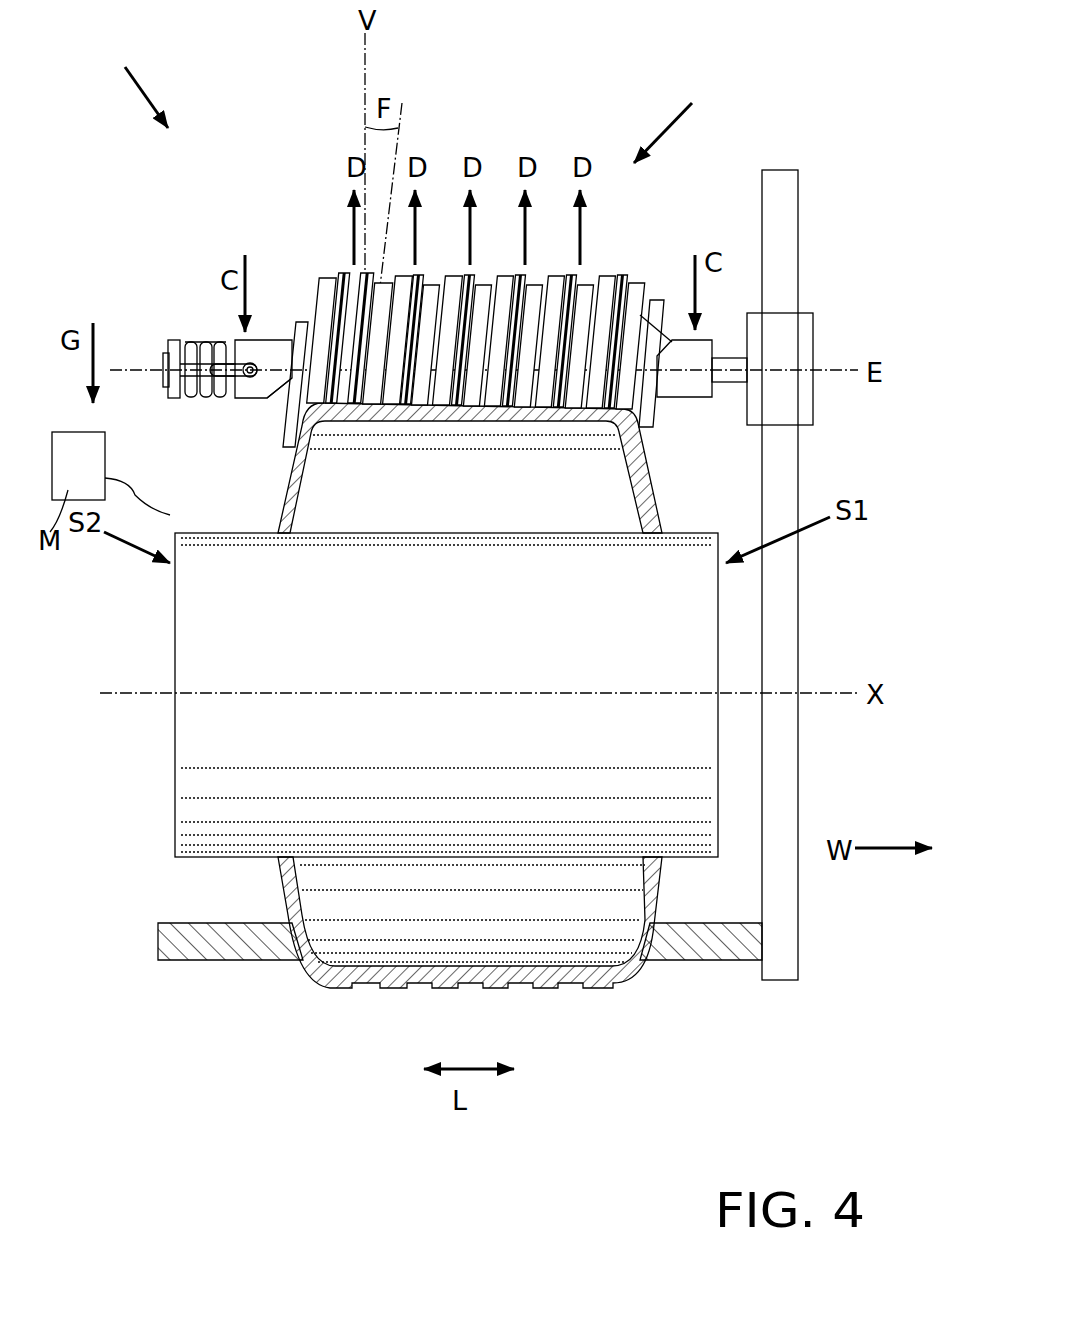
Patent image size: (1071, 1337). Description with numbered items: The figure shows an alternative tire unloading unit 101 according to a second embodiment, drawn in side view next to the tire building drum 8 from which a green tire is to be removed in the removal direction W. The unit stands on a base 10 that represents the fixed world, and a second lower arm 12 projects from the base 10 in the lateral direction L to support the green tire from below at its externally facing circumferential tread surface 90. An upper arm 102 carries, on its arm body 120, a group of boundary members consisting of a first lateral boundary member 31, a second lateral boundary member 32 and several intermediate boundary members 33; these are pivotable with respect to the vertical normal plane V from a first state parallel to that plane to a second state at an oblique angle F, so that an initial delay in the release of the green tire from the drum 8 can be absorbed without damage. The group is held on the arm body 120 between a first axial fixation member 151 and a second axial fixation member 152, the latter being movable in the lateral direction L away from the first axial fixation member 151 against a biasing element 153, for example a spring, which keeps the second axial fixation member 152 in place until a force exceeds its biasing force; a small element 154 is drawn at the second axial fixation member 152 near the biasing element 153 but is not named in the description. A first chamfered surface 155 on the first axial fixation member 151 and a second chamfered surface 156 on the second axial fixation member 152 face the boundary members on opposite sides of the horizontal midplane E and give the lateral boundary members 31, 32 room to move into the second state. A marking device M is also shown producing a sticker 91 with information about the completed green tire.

The tire building drum 8 is at (185, 733).
The base 10 is at (780, 250).
The second lower arm 12 is at (688, 962).
The first lateral boundary member 31 is at (656, 408).
The second lateral boundary member 32 is at (282, 432).
The intermediate boundary members 33 is at (340, 276).
The tread surface 90 is at (350, 990).
The sticker 91 is at (154, 504).
The alternative tire unloading unit 101 is at (130, 47).
The upper arm 102 is at (498, 302).
The arm body 120 is at (165, 372).
The first axial fixation member 151 is at (685, 353).
The second axial fixation member 152 is at (275, 343).
The biasing element 153 is at (190, 340).
The pin 154 is at (248, 375).
The first chamfered surface 155 is at (640, 315).
The second chamfered surface 156 is at (272, 394).